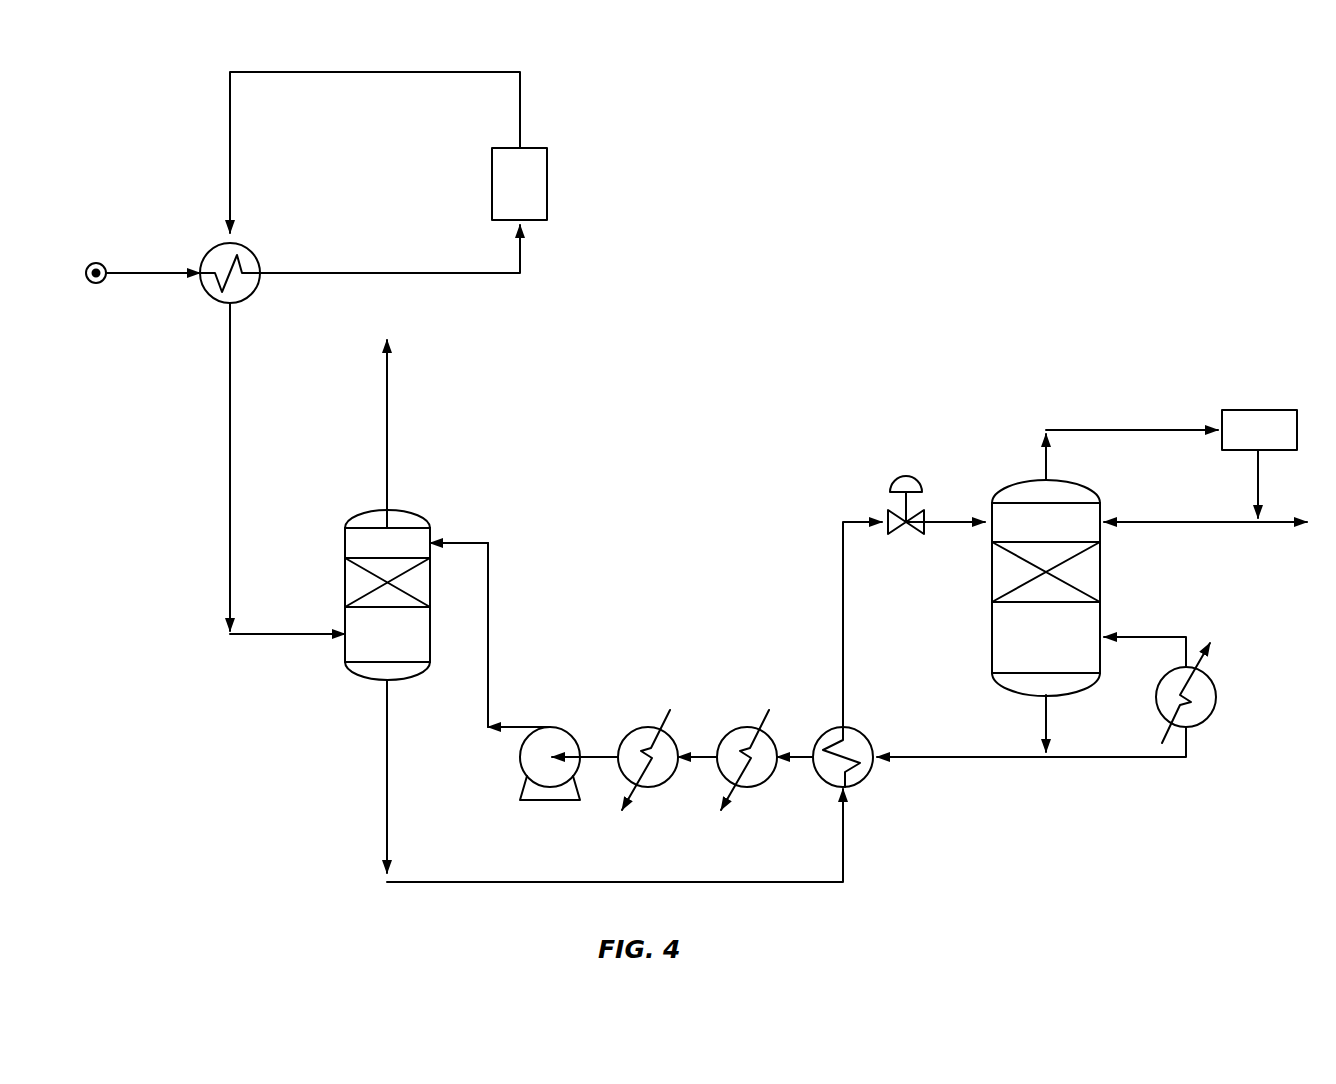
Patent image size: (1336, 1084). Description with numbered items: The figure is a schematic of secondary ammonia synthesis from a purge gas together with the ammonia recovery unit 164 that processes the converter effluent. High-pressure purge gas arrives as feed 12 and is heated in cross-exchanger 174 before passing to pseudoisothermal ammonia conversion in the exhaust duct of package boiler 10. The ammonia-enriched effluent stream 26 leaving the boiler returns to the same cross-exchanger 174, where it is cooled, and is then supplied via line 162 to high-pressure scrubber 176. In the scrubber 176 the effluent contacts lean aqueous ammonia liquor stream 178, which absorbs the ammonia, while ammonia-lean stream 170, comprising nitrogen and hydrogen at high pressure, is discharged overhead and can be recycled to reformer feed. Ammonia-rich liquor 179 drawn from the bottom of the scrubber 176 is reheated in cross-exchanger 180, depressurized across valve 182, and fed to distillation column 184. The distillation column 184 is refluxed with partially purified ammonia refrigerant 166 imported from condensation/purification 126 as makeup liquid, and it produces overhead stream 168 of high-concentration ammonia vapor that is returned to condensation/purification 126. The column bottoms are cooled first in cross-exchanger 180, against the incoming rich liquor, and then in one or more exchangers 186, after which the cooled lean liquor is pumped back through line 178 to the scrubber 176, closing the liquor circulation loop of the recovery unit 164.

The package boiler unit 10 is at (547, 183).
The feed 12 is at (488, 273).
The ammonia-enriched effluent stream 26 is at (433, 72).
The condensation/purification 126 is at (1220, 418).
The line 162 is at (230, 487).
The ammonia recovery unit 164 is at (288, 858).
The partially purified ammonia refrigerant 166 is at (1145, 524).
The high-concentration ammonia vapor stream 168 is at (1046, 430).
The ammonia-lean stream 170 is at (387, 408).
The cross-exchanger 174 is at (242, 243).
The high-pressure scrubber 176 is at (410, 510).
The lean aqueous ammonia liquor stream 178 is at (488, 543).
The ammonia-rich liquor 179 is at (388, 785).
The cross-exchanger 180 is at (858, 785).
The valve 182 is at (904, 512).
The distillation column 184 is at (992, 637).
The exchangers 186 is at (723, 736).